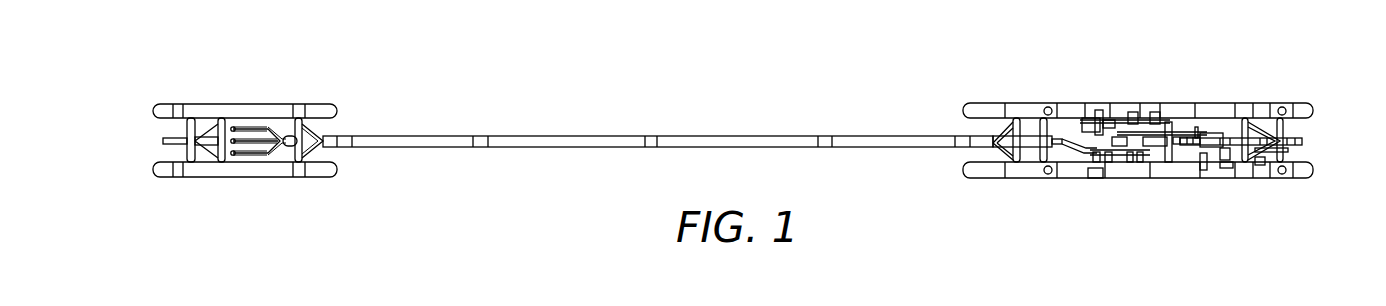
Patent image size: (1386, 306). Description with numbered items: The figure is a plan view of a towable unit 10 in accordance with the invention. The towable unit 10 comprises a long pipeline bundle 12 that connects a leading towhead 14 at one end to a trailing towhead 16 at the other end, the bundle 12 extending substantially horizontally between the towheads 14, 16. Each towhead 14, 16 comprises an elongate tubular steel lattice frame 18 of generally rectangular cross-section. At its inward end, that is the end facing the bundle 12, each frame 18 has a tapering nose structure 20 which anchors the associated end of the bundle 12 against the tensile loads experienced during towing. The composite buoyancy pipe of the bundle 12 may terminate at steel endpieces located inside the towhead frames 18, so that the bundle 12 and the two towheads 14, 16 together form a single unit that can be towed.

The towable unit 10 is at (786, 98).
The pipeline bundle 12 is at (572, 140).
The leading towhead 14 is at (1115, 155).
The trailing towhead 16 is at (241, 178).
The elongate tubular steel lattice frame 18 is at (237, 105).
The tapering nose structure 20 is at (310, 160).